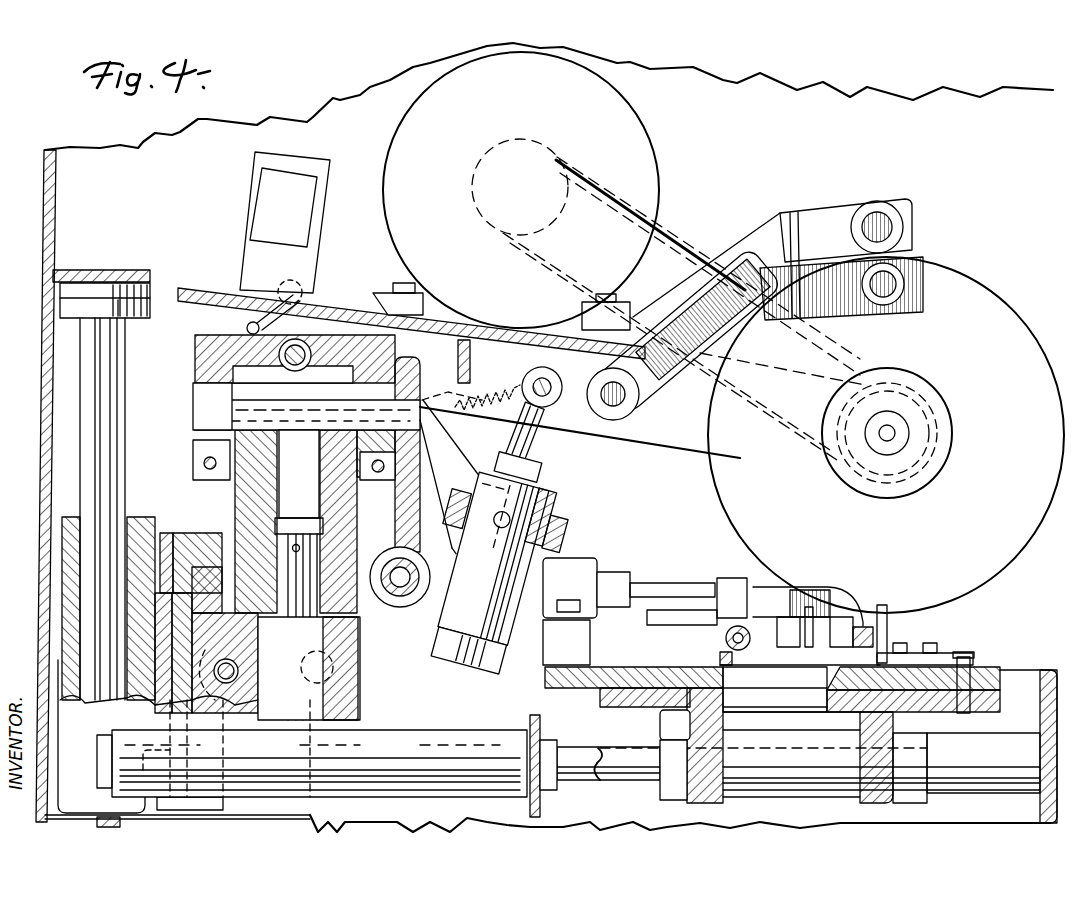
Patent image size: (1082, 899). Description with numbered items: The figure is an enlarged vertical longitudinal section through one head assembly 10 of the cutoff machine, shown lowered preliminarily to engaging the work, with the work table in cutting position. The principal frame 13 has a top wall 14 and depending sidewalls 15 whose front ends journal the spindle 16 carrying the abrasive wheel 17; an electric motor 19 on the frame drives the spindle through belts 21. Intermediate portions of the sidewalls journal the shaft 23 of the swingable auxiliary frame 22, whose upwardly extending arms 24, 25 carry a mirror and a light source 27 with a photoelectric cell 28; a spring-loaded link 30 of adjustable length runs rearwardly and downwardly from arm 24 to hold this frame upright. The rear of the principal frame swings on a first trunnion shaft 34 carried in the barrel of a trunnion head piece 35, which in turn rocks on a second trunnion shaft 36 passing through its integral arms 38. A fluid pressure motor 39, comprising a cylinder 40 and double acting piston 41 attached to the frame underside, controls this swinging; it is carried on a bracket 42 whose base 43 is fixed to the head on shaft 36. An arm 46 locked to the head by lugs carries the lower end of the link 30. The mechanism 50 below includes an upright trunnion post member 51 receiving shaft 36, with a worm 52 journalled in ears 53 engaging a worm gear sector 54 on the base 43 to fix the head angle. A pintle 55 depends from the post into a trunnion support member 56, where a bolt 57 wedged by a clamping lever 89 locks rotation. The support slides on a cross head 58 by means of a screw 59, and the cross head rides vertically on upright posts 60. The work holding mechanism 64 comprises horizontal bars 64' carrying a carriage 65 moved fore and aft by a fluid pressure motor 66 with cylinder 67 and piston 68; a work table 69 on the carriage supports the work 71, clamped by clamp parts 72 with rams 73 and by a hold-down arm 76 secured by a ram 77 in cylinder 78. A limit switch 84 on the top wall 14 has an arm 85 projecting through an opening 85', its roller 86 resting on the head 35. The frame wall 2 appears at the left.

The frame wall 2 is at (44, 395).
The head assembly 10 is at (388, 285).
The principal frame 13 is at (686, 452).
The top wall 14 is at (496, 320).
The sidewall 15 is at (555, 425).
The spindle 16 is at (893, 435).
The abrasive wheel 17 is at (978, 292).
The electric motor 19 is at (637, 147).
The belts 21 is at (688, 242).
The auxiliary frame 22 is at (768, 213).
The shaft 23 is at (633, 405).
The arm 24 is at (765, 335).
The arm 25 is at (690, 290).
The light source 27 is at (878, 213).
The photoelectric cell 28 is at (900, 305).
The link 30 is at (490, 390).
The first trunnion shaft 34 is at (305, 340).
The trunnion head piece 35 is at (195, 360).
The second trunnion shaft 36 is at (193, 450).
The arms 38 is at (200, 396).
The fluid pressure motor 39 is at (560, 500).
The cylinder 40 is at (442, 612).
The double acting piston 41 is at (535, 375).
The bracket 42 is at (450, 462).
The base 43 is at (398, 456).
The arm 46 is at (300, 440).
The mechanism 50 is at (200, 545).
The trunnion post member 51 is at (240, 490).
The worm 52 is at (410, 568).
The ears 53 is at (388, 597).
The worm gear sector 54 is at (440, 548).
The pintle 55 is at (302, 658).
The trunnion support member 56 is at (358, 645).
The bolt 57 is at (360, 682).
The cross head 58 is at (158, 672).
The screw 59 is at (232, 683).
The upright posts 60 is at (120, 440).
The work holding mechanism 64 is at (554, 769).
The horizontal bars 64' is at (621, 739).
The carriage 65 is at (690, 722).
The fluid pressure motor 66 is at (405, 745).
The cylinder 67 is at (466, 790).
The double acting piston 68 is at (574, 757).
The work table 69 is at (548, 676).
The work 71 is at (868, 608).
The clamp part 72 is at (880, 635).
The ram 73 is at (758, 640).
The hold-down arm 76 is at (783, 592).
The ram 77 is at (672, 580).
The cylinder 78 is at (612, 575).
The limit switch 84 is at (315, 222).
The arm 85 is at (277, 281).
The opening 85' is at (254, 294).
The roller 86 is at (247, 327).
The clamping lever 89 is at (330, 806).